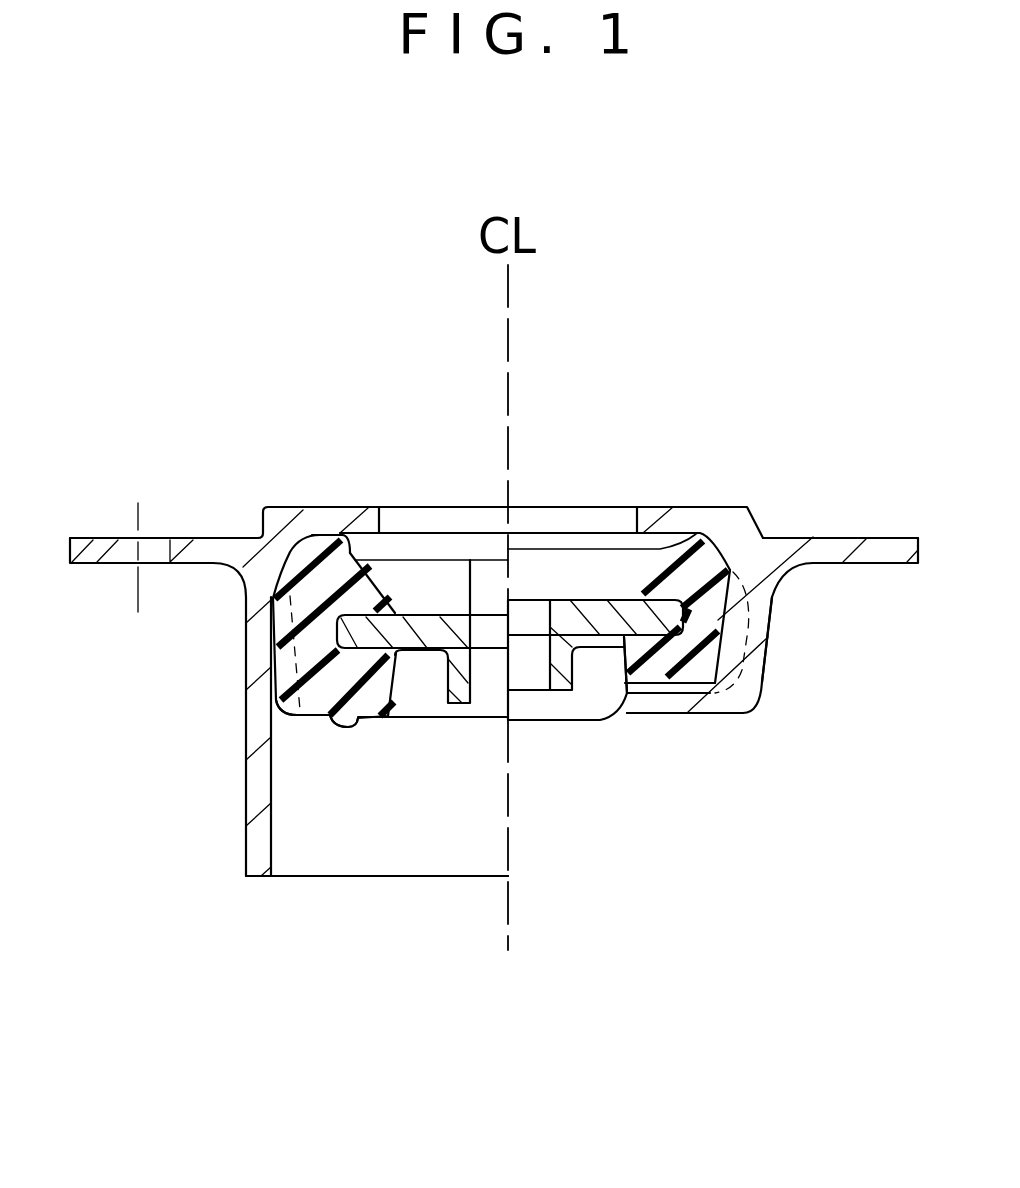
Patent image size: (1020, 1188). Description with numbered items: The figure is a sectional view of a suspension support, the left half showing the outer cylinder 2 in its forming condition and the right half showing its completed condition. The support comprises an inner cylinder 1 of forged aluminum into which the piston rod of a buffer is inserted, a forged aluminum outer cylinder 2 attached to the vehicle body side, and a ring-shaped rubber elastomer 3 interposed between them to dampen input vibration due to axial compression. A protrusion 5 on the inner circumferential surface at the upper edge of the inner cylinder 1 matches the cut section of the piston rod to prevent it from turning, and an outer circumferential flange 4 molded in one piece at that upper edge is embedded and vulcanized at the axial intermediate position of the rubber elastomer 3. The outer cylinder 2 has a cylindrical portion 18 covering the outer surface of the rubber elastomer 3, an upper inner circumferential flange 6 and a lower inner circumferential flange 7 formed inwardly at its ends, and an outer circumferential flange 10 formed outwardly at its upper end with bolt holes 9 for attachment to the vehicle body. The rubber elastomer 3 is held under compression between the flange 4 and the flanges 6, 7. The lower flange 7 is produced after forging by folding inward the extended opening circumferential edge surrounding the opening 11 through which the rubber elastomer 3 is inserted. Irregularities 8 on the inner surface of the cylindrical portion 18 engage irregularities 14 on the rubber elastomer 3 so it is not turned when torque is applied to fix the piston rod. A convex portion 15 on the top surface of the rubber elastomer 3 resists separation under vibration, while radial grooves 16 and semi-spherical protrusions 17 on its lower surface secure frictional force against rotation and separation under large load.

The inner cylinder 1 is at (571, 568).
The outer cylinder 2 is at (725, 484).
The rubber elastomer 3 is at (671, 672).
The outer circumferential flange 4 is at (600, 620).
The protrusion 5 is at (470, 613).
The upper inner circumferential flange 6 is at (348, 550).
The lower inner circumferential flange 7 is at (615, 715).
The irregularities 8 is at (290, 673).
The bolt holes 9 is at (122, 552).
The outer circumferential flange 10 is at (823, 552).
The opening 11 is at (365, 877).
The irregularities 14 is at (300, 711).
The convex portion 15 is at (322, 535).
The radial grooves 16 is at (687, 707).
The semi-spherical protrusions 17 is at (340, 715).
The cylindrical portion 18 is at (757, 617).